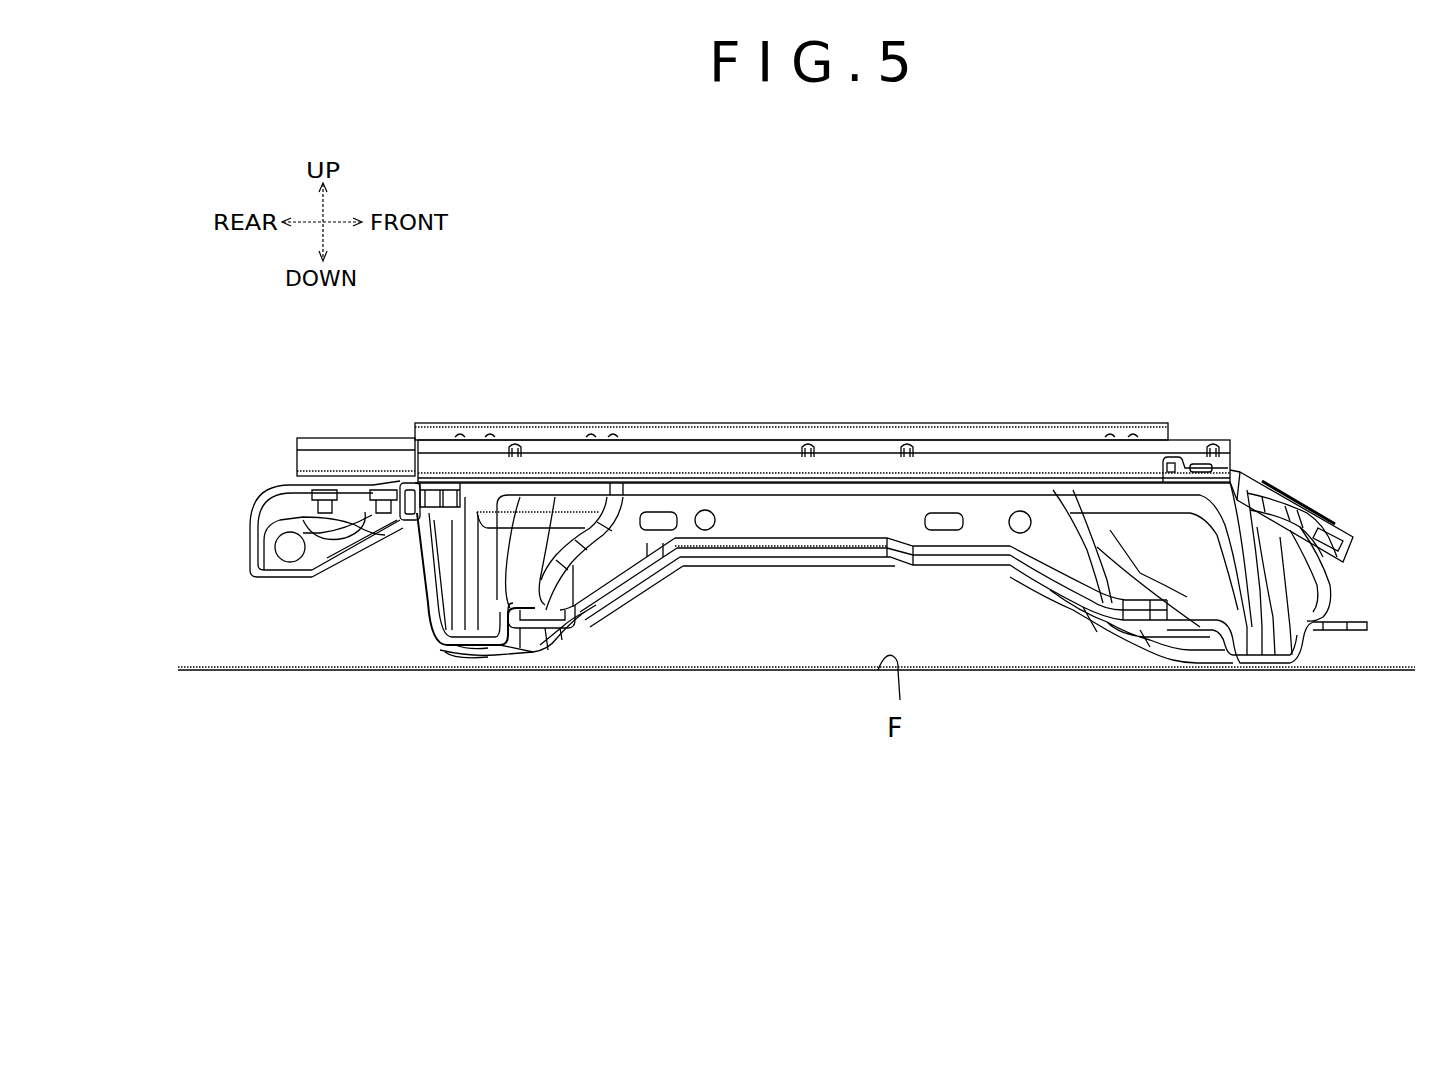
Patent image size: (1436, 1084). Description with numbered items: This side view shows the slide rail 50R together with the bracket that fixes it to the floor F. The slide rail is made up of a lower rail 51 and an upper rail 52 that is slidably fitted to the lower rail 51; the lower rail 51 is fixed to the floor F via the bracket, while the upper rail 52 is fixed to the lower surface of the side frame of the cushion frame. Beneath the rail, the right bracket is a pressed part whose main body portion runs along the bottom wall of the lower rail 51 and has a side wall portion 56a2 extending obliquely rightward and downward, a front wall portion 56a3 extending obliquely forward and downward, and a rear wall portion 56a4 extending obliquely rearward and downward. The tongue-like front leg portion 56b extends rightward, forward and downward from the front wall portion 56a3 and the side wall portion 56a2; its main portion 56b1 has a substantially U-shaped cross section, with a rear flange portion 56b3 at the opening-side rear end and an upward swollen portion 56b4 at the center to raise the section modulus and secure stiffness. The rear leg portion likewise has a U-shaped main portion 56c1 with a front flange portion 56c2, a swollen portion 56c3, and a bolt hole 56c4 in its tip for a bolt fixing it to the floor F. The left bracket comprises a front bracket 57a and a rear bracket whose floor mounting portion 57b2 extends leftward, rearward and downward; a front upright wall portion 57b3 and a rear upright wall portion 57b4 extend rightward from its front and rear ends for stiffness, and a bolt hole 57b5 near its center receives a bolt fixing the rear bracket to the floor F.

The seat slide rail (right) 50R is at (548, 347).
The lower rail 51 is at (344, 438).
The upper rail 52 is at (471, 423).
The side wall portion 56a2 is at (802, 532).
The front wall portion 56a3 is at (1263, 468).
The rear wall portion 56a4 is at (417, 518).
The front leg portion 56b is at (1328, 592).
The main portion 56b1 is at (1268, 667).
The rear flange portion 56b3 is at (1107, 622).
The swollen portion 56b4 is at (1187, 577).
The main portion 56c1 is at (493, 650).
The front flange portion 56c2 is at (617, 608).
The swollen portion 56c3 is at (540, 605).
The bolt hole 56c4 is at (442, 655).
The front bracket 57a is at (1318, 502).
The floor mounting portion 57b2 is at (282, 568).
The front upright wall portion 57b3 is at (358, 577).
The rear upright wall portion 57b4 is at (247, 532).
The bolt hole 57b5 is at (264, 542).